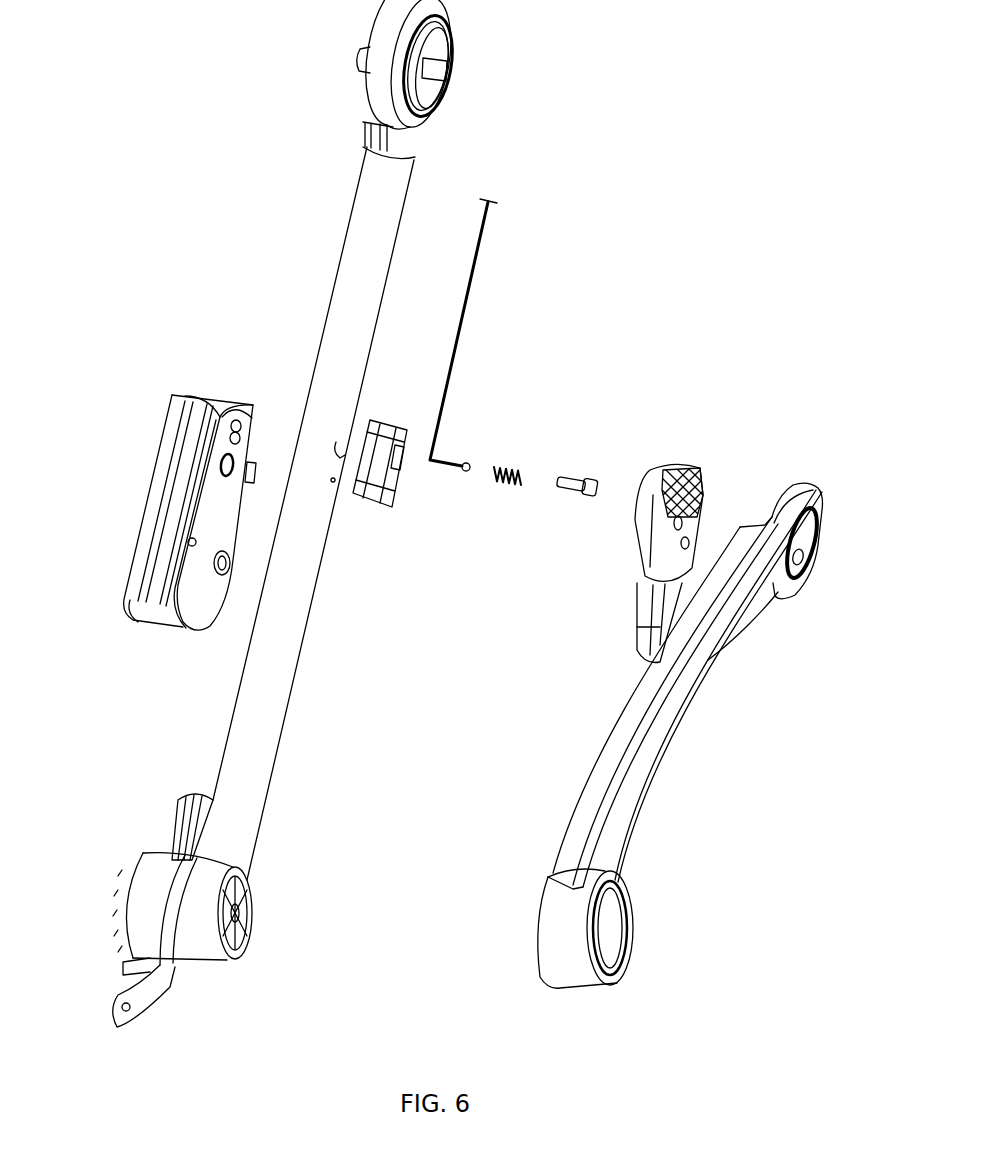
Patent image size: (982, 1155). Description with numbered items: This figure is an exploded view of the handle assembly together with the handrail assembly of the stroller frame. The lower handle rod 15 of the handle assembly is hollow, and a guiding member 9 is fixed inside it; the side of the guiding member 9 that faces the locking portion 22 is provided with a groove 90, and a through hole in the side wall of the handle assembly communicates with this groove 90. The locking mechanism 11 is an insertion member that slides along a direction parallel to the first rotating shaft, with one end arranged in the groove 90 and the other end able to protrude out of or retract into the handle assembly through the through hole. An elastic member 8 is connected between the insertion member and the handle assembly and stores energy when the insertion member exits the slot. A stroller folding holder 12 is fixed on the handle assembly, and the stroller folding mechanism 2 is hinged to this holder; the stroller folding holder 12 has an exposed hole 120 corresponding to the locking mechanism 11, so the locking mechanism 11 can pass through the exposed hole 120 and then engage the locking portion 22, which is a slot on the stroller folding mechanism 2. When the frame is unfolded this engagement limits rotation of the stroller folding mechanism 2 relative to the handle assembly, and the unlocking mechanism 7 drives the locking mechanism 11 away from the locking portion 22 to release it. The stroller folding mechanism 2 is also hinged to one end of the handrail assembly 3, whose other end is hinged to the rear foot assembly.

The lower handle rod 15 is at (380, 213).
The stroller folding holder 12 is at (197, 587).
The exposed hole 120 is at (225, 429).
The guiding member 9 is at (383, 510).
The groove 90 is at (403, 467).
The unlocking mechanism 7 is at (432, 457).
The elastic member 8 is at (510, 468).
The locking mechanism 11 is at (572, 477).
The stroller folding mechanism 2 is at (673, 467).
The locking portion 22 is at (707, 475).
The handrail assembly 3 is at (670, 707).